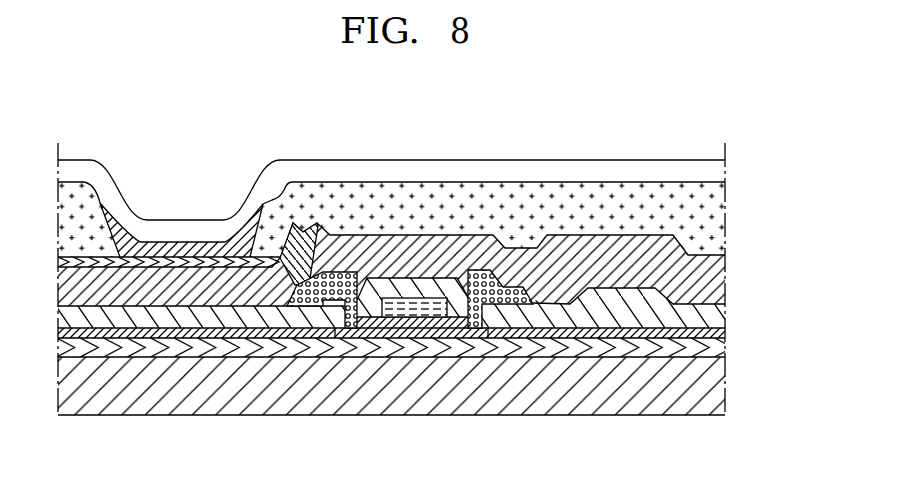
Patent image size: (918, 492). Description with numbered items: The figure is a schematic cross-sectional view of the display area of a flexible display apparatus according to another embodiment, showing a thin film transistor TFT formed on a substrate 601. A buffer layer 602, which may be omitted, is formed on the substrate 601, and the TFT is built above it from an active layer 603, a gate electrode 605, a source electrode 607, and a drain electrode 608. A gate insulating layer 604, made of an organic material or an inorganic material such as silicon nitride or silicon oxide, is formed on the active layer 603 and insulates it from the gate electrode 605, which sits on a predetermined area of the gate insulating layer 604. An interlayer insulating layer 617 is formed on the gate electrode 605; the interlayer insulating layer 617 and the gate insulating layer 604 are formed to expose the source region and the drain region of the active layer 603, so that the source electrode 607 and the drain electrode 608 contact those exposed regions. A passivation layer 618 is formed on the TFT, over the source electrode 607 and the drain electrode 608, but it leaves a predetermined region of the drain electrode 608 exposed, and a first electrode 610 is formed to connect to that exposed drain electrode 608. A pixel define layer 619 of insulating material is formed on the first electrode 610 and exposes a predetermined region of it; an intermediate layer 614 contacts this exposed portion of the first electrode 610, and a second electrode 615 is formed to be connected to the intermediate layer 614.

The substrate 601 is at (720, 385).
The buffer layer 602 is at (720, 348).
The active layer 603 is at (450, 333).
The gate insulating layer 604 is at (720, 333).
The gate electrode 605 is at (413, 305).
The source electrode 607 is at (490, 293).
The drain electrode 608 is at (320, 308).
The first electrode 610 is at (183, 258).
The intermediate layer 614 is at (137, 220).
The second electrode 615 is at (103, 183).
The interlayer insulating layer 617 is at (720, 322).
The passivation layer 618 is at (718, 277).
The pixel define layer 619 is at (717, 218).
The thin film transistor TFT is at (414, 272).